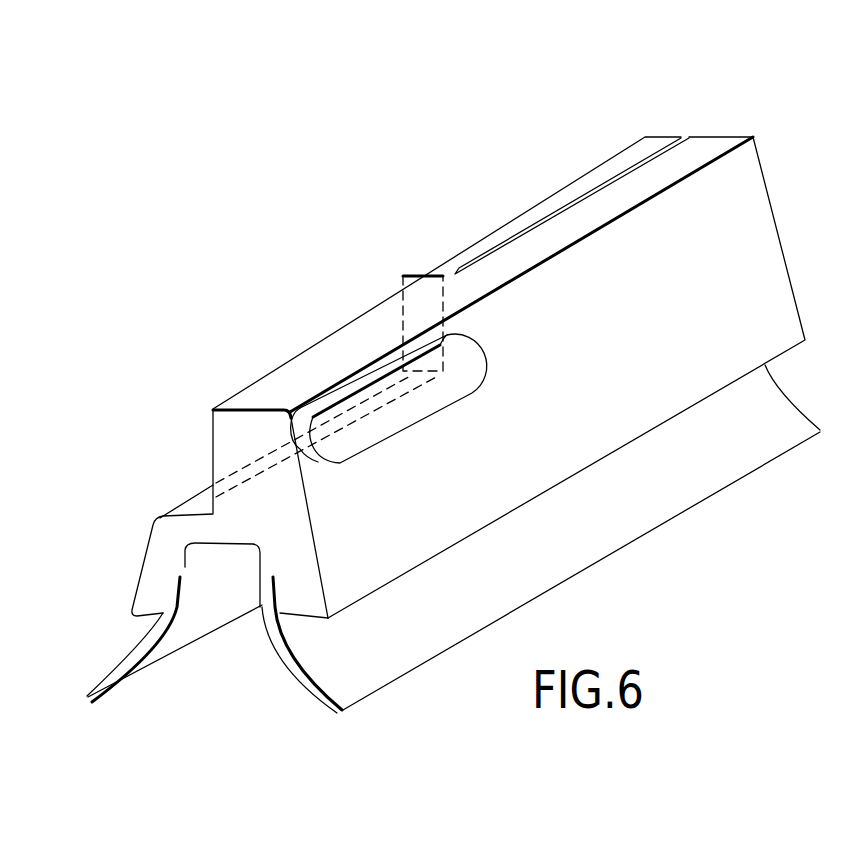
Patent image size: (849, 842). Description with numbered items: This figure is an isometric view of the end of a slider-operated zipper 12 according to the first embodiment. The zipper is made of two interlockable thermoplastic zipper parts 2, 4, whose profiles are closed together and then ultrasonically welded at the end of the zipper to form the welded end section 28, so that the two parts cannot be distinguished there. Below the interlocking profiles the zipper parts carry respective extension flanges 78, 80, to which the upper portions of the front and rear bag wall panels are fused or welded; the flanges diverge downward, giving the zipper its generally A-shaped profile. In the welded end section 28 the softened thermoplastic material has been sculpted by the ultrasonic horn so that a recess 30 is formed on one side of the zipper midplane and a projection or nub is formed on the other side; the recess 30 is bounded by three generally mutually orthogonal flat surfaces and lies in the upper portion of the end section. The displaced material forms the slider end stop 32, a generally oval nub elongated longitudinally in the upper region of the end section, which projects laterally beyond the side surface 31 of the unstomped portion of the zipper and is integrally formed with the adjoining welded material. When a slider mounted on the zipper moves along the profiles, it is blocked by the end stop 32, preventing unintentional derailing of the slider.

The rail assembly 12 is at (646, 112).
The zipper part 2 is at (683, 157).
The side surface 31 is at (760, 257).
The zipper part 4 is at (535, 207).
The slider end stop 32 is at (362, 378).
The recess 30 is at (180, 417).
The welded end section 28 is at (128, 543).
The extension flange 80 is at (130, 655).
The extension flange 78 is at (313, 697).